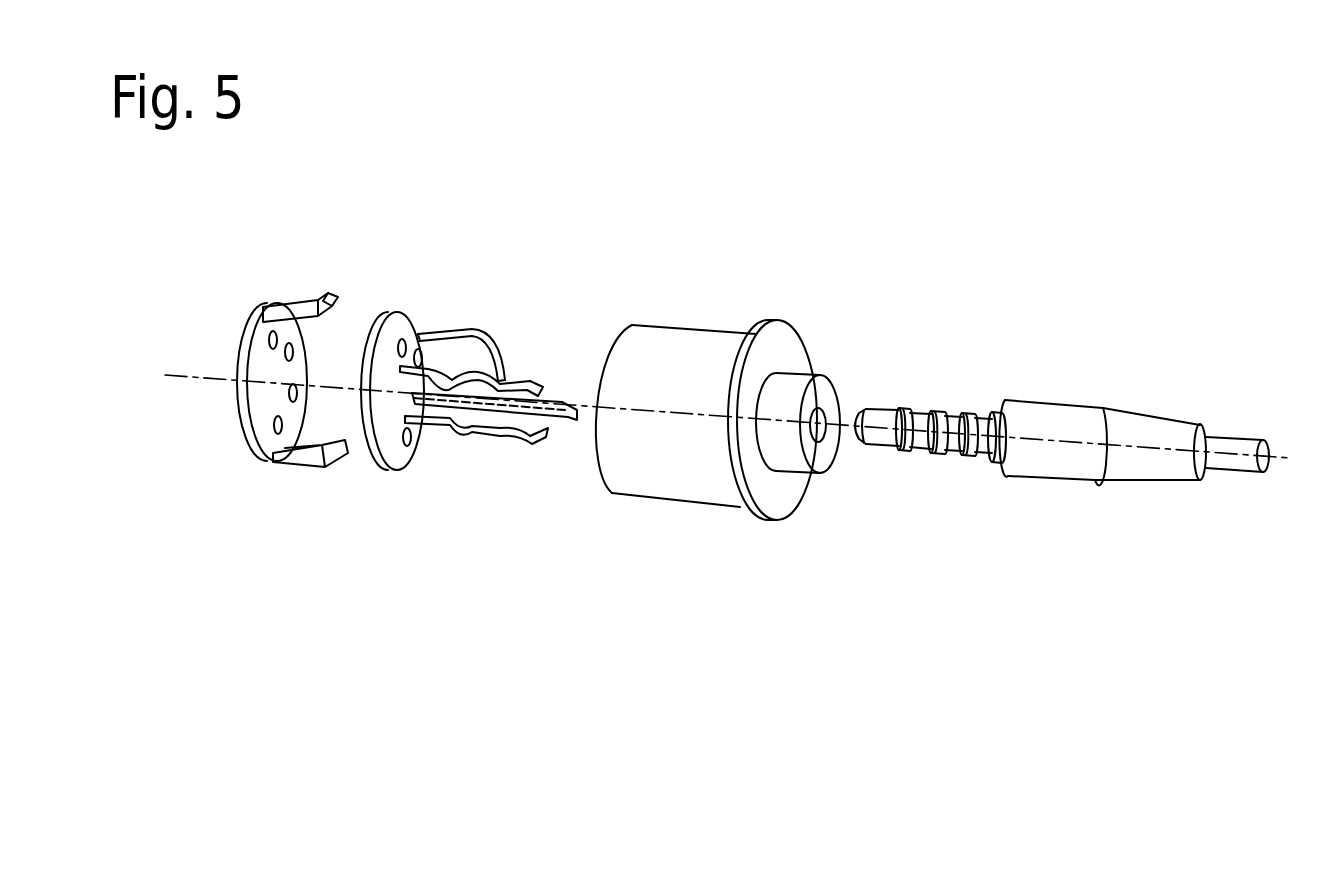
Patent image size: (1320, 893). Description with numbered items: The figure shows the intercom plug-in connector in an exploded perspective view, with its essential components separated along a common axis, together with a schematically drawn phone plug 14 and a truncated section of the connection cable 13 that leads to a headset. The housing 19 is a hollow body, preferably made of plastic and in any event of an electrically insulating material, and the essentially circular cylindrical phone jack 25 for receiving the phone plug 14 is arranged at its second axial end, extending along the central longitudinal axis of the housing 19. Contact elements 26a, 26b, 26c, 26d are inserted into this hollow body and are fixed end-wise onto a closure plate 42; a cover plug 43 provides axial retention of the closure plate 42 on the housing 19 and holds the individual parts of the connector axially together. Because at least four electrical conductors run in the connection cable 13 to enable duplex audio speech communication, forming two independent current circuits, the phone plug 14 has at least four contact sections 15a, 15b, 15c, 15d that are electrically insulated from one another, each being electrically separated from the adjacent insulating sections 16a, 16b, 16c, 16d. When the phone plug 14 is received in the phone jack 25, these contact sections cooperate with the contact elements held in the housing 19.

The connection cable 13 is at (1238, 445).
The phone plug 14 is at (1010, 409).
The contact section 15a is at (878, 438).
The contact section 15b is at (917, 443).
The contact section 15c is at (948, 445).
The contact section 15d is at (978, 447).
The insulating section 16a is at (900, 412).
The insulating section 16b is at (937, 416).
The insulating section 16c is at (966, 416).
The insulating section 16d is at (996, 414).
The housing 19 is at (677, 342).
The phone jack 25 is at (821, 420).
The contact element 26a is at (493, 428).
The contact element 26b is at (481, 330).
The contact element 26c is at (515, 378).
The contact element 26d is at (560, 414).
The closure plate 42 is at (395, 433).
The cover plug 43 is at (265, 360).